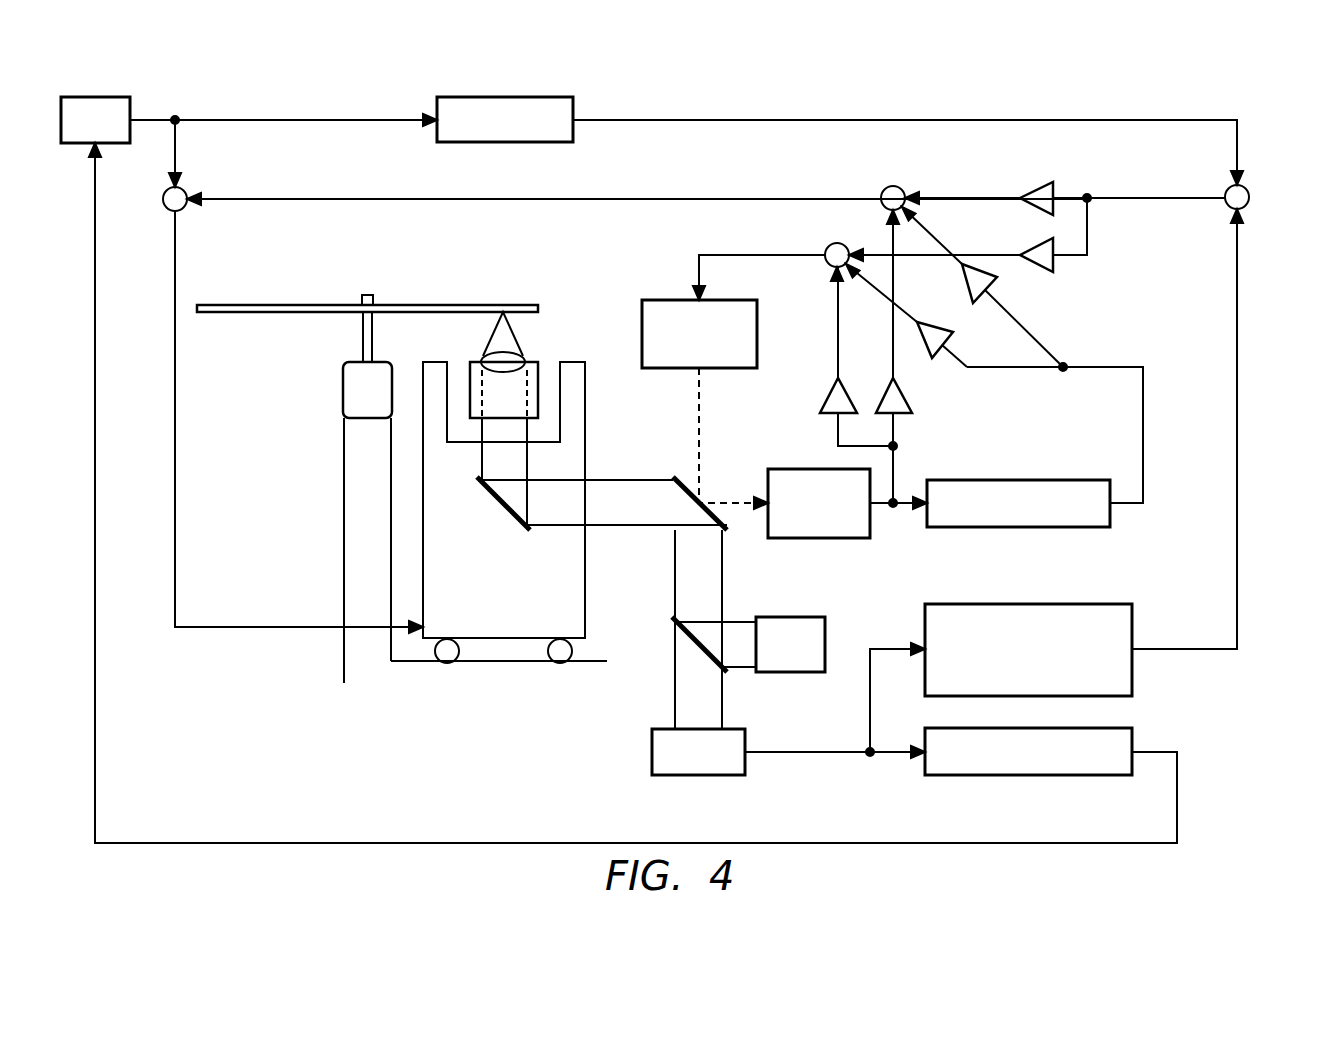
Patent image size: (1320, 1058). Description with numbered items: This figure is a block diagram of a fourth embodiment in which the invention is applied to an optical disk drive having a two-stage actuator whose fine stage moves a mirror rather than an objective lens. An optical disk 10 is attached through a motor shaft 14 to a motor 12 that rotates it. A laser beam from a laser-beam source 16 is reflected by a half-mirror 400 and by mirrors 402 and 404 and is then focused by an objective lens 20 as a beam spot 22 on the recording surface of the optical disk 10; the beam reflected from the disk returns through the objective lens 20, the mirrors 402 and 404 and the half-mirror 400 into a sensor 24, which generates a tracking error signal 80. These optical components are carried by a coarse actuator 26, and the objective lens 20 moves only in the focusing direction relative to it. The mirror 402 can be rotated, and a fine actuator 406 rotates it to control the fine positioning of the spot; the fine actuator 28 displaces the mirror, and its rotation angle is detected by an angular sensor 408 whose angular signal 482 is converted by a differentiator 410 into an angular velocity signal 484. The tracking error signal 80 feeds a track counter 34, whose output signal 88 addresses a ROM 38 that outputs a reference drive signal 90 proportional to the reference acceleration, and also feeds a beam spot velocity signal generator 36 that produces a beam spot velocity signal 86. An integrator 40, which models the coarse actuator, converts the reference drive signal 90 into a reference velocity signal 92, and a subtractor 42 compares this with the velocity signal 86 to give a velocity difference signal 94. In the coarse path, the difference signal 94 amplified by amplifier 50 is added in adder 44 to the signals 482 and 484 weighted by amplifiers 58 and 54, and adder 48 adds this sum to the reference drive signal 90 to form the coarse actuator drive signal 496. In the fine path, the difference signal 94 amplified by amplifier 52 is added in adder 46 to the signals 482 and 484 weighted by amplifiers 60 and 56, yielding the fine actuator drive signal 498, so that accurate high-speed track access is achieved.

The optical disk 10 is at (440, 304).
The motor 12 is at (342, 372).
The motor shaft 14 is at (365, 293).
The laser-beam source 16 is at (793, 615).
The objective lens 20 is at (485, 343).
The beam spot 22 is at (512, 316).
The sensor 24 is at (750, 738).
The coarse actuator 26 is at (588, 580).
The fine actuator 28 is at (517, 406).
The track counter 34 is at (1025, 777).
The beam spot velocity signal generator 36 is at (1135, 672).
The ROM 38 is at (80, 145).
The integrator 40 is at (575, 105).
The subtractor 42 is at (1250, 198).
The adder 44 is at (882, 190).
The adder 46 is at (825, 248).
The adder 48 is at (168, 210).
The amplifier 50 is at (1030, 188).
The amplifier 52 is at (1060, 262).
The amplifier 54 is at (998, 288).
The amplifier 56 is at (935, 322).
The amplifier 58 is at (915, 405).
The amplifier 60 is at (822, 393).
The TES 80 is at (830, 755).
The beam spot velocity signal 86 is at (1150, 648).
The track counter output signal 88 is at (1108, 841).
The reference drive signal 90 is at (155, 118).
The reference velocity signal 92 is at (835, 118).
The velocity difference signal 94 is at (1140, 200).
The half-mirror 400 is at (685, 647).
The mirror 402 is at (668, 475).
The mirror 404 is at (505, 512).
The fine actuator 406 is at (662, 298).
The angular sensor 408 is at (845, 540).
The differentiator 410 is at (1040, 478).
The angular signal 482 is at (882, 508).
The angular velocity signal 484 is at (1105, 365).
The coarse actuator drive signal 496 is at (178, 482).
The fine actuator drive signal 498 is at (712, 252).